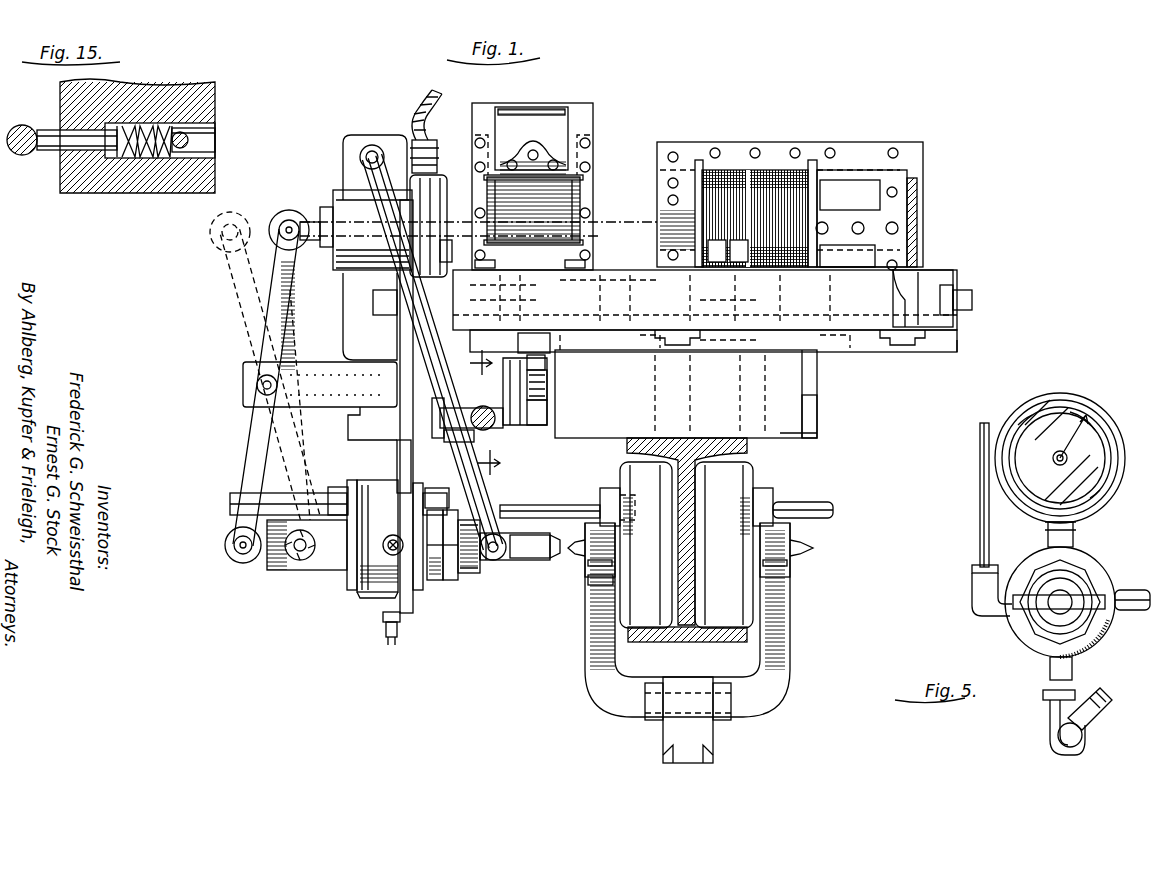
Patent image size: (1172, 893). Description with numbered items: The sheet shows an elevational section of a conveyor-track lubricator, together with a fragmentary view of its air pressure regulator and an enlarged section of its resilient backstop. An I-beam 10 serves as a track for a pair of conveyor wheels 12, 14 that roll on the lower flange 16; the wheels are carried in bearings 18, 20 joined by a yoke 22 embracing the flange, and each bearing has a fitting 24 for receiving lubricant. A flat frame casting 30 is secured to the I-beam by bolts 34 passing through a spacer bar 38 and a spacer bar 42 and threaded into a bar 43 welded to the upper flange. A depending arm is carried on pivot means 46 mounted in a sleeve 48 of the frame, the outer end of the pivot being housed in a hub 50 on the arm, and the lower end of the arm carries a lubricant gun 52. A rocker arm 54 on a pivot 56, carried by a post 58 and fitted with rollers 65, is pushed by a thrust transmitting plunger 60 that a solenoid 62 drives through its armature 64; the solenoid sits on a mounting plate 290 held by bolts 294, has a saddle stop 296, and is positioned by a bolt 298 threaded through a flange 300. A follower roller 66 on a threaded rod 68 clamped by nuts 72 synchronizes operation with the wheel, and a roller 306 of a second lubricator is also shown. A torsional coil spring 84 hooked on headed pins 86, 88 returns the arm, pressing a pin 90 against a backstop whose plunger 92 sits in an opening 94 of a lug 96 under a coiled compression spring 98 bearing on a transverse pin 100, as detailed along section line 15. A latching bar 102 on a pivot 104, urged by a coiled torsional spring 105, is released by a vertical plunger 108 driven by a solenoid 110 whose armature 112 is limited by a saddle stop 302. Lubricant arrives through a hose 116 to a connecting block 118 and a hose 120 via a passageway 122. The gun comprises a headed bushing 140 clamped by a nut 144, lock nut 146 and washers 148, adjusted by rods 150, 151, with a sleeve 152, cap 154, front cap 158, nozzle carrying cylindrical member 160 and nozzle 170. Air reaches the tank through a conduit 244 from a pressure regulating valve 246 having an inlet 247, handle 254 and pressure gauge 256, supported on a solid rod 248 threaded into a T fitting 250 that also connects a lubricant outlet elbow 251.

In FIG. 1, the I-beam 10 is at (726, 458).
In FIG. 1, the conveyor wheel 12 is at (625, 465).
In FIG. 1, the conveyor wheel 14 is at (745, 468).
In FIG. 1, the section line 15- 15 is at (487, 416).
In FIG. 1, the lower flange 16 is at (700, 640).
In FIG. 1, the bearing 18 is at (592, 585).
In FIG. 1, the bearing 20 is at (792, 567).
In FIG. 1, the yoke 22 is at (760, 720).
In FIG. 1, the fitting 24 is at (816, 548).
In FIG. 1, the frame casting 30 is at (968, 354).
In FIG. 1, the bolt 34 is at (712, 395).
In FIG. 1, the spacer bar 38 is at (810, 395).
In FIG. 1, the spacer bar 42 is at (815, 415).
In FIG. 1, the bar 43 is at (815, 436).
In FIG. 1, the pivot means 46 is at (328, 240).
In FIG. 1, the sleeve 48 is at (455, 195).
In FIG. 1, the hub 50 is at (370, 290).
In FIG. 1, the lubricant gun 52 is at (530, 565).
In FIG. 1, the rocker arm 54 is at (240, 318).
In FIG. 1, the pivot 56 is at (255, 385).
In FIG. 1, the post 58 is at (280, 370).
In FIG. 1, the thrust transmitting plunger 60 is at (296, 210).
In FIG. 1, the solenoid 62 is at (735, 145).
In FIG. 1, the armature 64 is at (838, 218).
In FIG. 1, the roller 65 is at (245, 215).
In FIG. 1, the roller 66 is at (605, 488).
In FIG. 1, the threaded rod 68 is at (538, 505).
In FIG. 1, the nut 72 is at (340, 487).
In FIG. 1, the torsional coil spring 84 is at (445, 248).
In FIG. 1, the headed pin 86 is at (400, 335).
In FIG. 1, the headed pin 88 is at (455, 292).
In FIG. 15, the pin 90 is at (22, 145).
In FIG. 1, the pin 90 is at (495, 425).
In FIG. 15, the plunger 92 is at (84, 150).
In FIG. 15, the opening 94 is at (205, 126).
In FIG. 1, the opening 94 is at (480, 428).
In FIG. 15, the lug 96 is at (172, 182).
In FIG. 1, the lug 96 is at (470, 445).
In FIG. 15, the coiled compression spring 98 is at (130, 160).
In FIG. 1, the coiled compression spring 98 is at (460, 430).
In FIG. 15, the transverse pin 100 is at (188, 137).
In FIG. 1, the transverse pin 100 is at (495, 390).
In FIG. 1, the latching bar 102 is at (548, 408).
In FIG. 1, the pivot 104 is at (548, 385).
In FIG. 1, the coiled torsional spring 105 is at (518, 352).
In FIG. 1, the vertical plunger 108 is at (545, 368).
In FIG. 1, the solenoid 110 is at (583, 185).
In FIG. 1, the armature 112 is at (540, 148).
In FIG. 1, the hose 116 is at (437, 98).
In FIG. 5, the hose 116 is at (1100, 712).
In FIG. 1, the connecting block 118 is at (370, 135).
In FIG. 1, the hose 120 is at (372, 207).
In FIG. 1, the passageway 122 is at (390, 145).
In FIG. 1, the headed bushing 140 is at (352, 598).
In FIG. 1, the nut 144 is at (432, 583).
In FIG. 1, the lock nut 146 is at (450, 582).
In FIG. 1, the washer 148 is at (383, 618).
In FIG. 1, the rod 150 is at (392, 650).
In FIG. 1, the rod 151 is at (394, 534).
In FIG. 1, the sleeve 152 is at (310, 572).
In FIG. 1, the cap 154 is at (285, 565).
In FIG. 1, the cap 158 is at (468, 573).
In FIG. 1, the nozzle carrying cylindrical member 160 is at (488, 565).
In FIG. 1, the nozzle 170 is at (528, 562).
In FIG. 5, the conduit 244 is at (982, 545).
In FIG. 5, the pressure regulating valve 246 is at (1088, 582).
In FIG. 5, the inlet 247 is at (1128, 608).
In FIG. 5, the solid rod 248 is at (1075, 675).
In FIG. 5, the T fitting 250 is at (1043, 712).
In FIG. 5, the lubricant outlet elbow 251 is at (1080, 740).
In FIG. 5, the handle 254 is at (1030, 608).
In FIG. 5, the pressure gauge 256 is at (1108, 490).
In FIG. 1, the mounting plate 290 is at (810, 310).
In FIG. 1, the bolt 294 is at (870, 355).
In FIG. 1, the saddle stop 296 is at (920, 233).
In FIG. 1, the bolt 298 is at (975, 298).
In FIG. 1, the flange 300 is at (955, 275).
In FIG. 1, the saddle stop 302 is at (528, 103).
In FIG. 1, the roller 306 is at (775, 495).